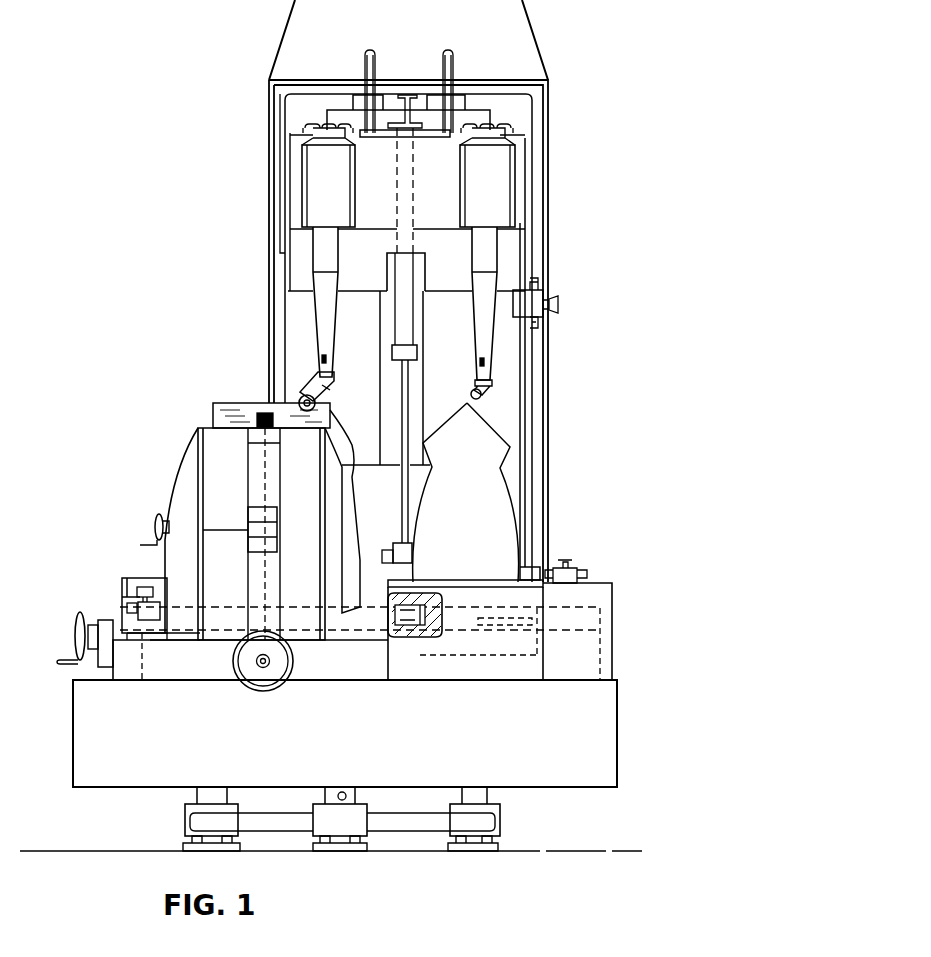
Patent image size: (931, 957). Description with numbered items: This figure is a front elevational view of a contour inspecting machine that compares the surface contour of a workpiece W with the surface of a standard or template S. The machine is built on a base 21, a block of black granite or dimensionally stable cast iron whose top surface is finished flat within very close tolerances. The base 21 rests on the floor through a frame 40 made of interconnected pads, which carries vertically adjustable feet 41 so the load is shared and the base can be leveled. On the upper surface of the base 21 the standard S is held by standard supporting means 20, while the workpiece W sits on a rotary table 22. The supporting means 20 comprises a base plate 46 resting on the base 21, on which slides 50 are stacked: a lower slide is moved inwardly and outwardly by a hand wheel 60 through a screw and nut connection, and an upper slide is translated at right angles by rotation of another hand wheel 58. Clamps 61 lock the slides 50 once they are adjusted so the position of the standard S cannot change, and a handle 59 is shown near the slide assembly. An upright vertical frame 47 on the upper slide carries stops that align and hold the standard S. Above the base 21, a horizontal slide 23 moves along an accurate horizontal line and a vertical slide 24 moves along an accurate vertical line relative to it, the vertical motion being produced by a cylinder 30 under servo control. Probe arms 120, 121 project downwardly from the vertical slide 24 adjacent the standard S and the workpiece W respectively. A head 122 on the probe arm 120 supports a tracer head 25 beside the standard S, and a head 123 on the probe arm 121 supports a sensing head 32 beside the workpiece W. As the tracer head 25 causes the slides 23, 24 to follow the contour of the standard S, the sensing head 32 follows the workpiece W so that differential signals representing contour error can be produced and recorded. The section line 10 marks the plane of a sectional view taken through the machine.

The section line 10- 10 is at (293, 112).
The standard supporting means 20 is at (119, 574).
The base 21 is at (613, 727).
The rotary table 22 is at (387, 597).
The horizontal slide 23 is at (548, 405).
The vertical slide 24 is at (517, 187).
The tracer head 25 is at (300, 393).
The cylinder 30 is at (402, 316).
The sensing head 32 is at (474, 390).
The frame 40 is at (503, 818).
The foot pads 41 is at (475, 851).
The base plate 46 is at (183, 668).
The vertical frame 47 is at (187, 477).
The slide 50 is at (167, 628).
The hand wheel 58 is at (77, 628).
The handle 59 is at (156, 520).
The hand wheel 60 is at (287, 678).
The clamp 61 is at (138, 603).
The probe arm 120 is at (323, 307).
The probe arm 121 is at (493, 247).
The head 122 is at (318, 373).
The head 123 is at (487, 383).
The standard S is at (340, 480).
The workpiece W is at (500, 490).